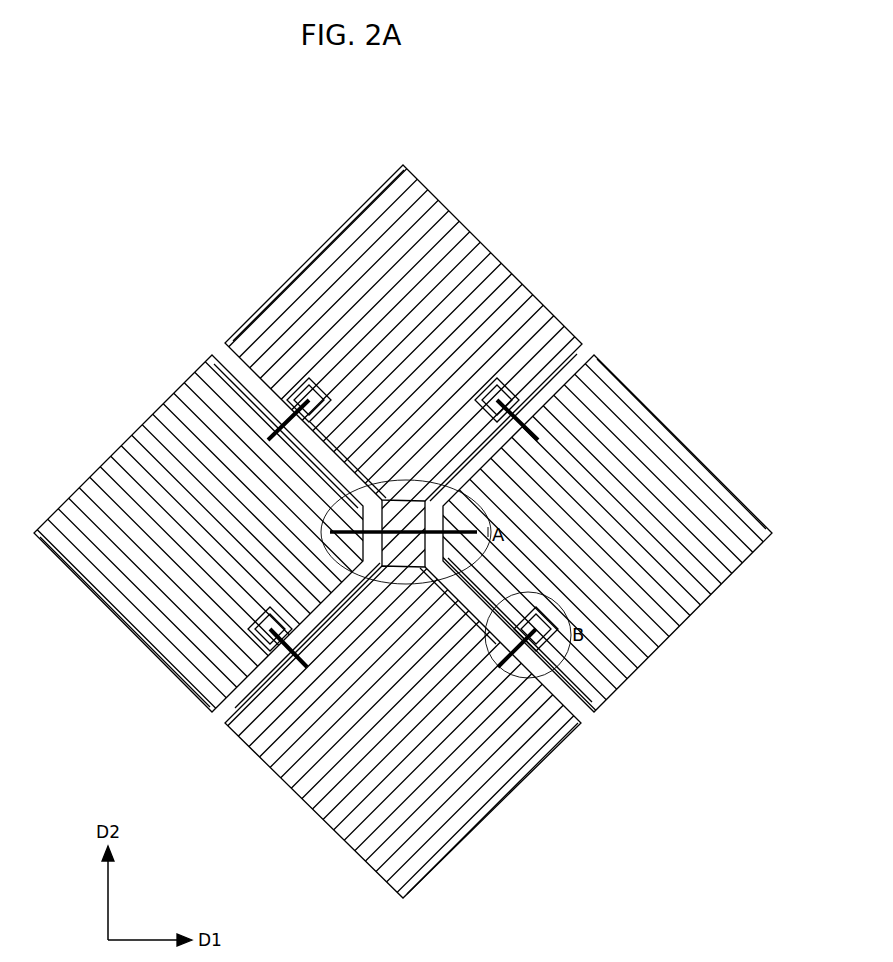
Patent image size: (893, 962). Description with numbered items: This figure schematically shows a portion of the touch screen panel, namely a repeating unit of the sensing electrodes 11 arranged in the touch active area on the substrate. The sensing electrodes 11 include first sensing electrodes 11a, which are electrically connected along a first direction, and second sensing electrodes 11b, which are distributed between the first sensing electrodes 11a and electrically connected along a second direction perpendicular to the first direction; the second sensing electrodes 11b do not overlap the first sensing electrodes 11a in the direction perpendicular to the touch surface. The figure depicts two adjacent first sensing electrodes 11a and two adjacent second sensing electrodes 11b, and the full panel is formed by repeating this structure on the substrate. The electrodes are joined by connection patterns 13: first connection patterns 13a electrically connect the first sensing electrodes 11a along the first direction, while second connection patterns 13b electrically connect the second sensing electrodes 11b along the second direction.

The sensing electrodes 11 is at (240, 236).
The first sensing electrodes 11a is at (165, 404).
The second sensing electrodes 11b is at (273, 293).
The connection patterns 13 is at (525, 133).
The first connection patterns 13a is at (416, 497).
The second connection patterns 13b is at (404, 527).